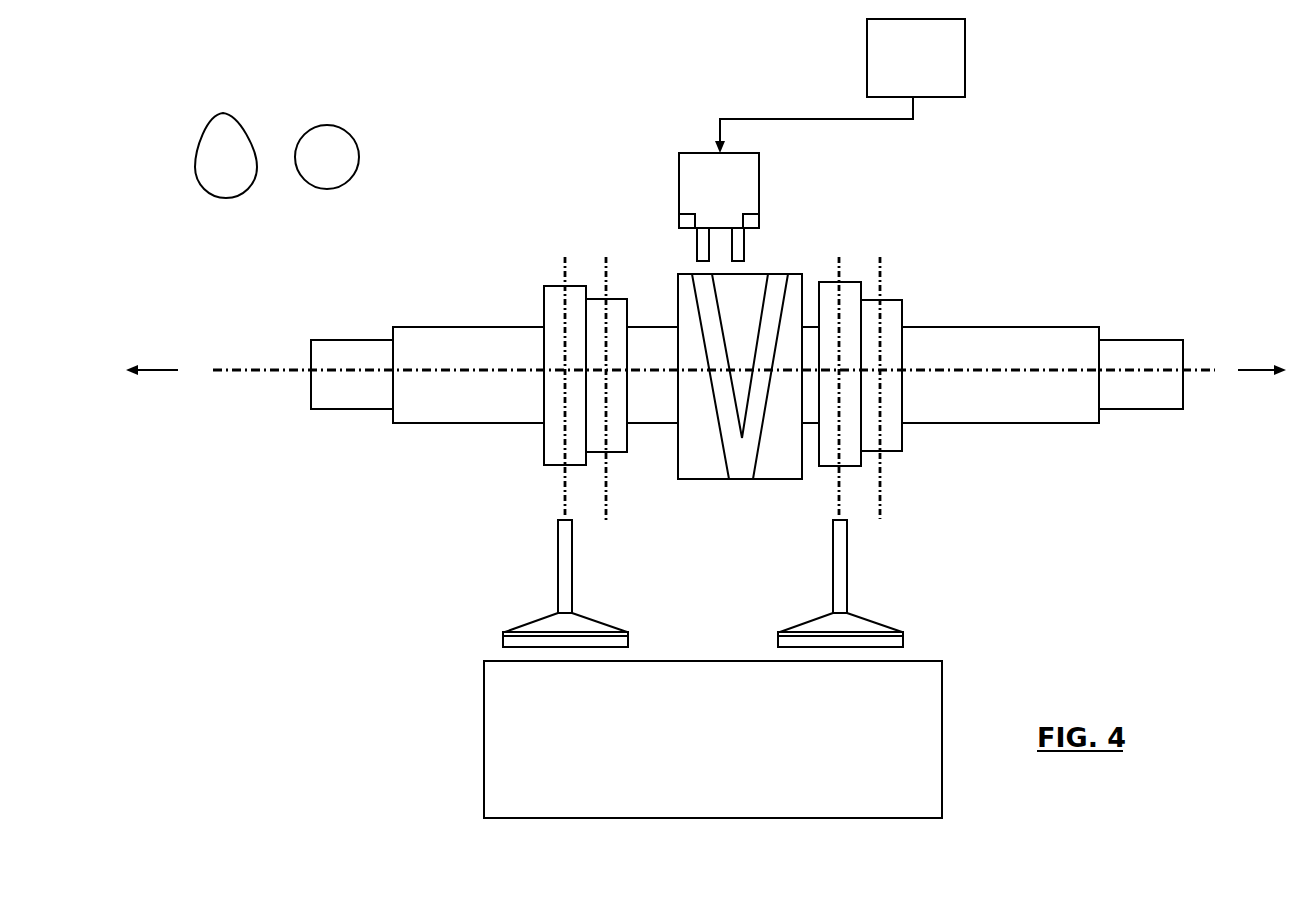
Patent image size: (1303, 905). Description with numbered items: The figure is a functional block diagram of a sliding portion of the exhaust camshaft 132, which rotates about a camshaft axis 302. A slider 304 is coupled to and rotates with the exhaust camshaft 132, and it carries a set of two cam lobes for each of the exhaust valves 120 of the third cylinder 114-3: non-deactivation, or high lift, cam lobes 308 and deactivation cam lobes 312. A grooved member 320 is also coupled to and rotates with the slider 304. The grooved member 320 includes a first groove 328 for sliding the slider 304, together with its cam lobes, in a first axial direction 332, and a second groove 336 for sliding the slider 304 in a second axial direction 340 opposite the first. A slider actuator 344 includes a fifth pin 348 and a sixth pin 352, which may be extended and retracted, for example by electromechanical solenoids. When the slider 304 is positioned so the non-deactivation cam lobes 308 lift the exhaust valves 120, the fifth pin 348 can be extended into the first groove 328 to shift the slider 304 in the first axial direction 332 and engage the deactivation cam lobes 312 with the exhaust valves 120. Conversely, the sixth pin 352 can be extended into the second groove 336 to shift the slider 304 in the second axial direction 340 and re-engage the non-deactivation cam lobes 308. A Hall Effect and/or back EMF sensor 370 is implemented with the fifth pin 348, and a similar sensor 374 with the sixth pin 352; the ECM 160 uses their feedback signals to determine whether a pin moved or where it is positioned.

The ECM 160 is at (965, 62).
The slider actuator 344 is at (702, 150).
The Hall Effect sensor and/or back EMF sensor 370 is at (680, 210).
The Hall Effect sensor and/or back EMF sensor 374 is at (752, 210).
The fifth pin 348 is at (697, 240).
The sixth pin 352 is at (745, 240).
The grooved member 320 is at (693, 479).
The first groove 328 is at (709, 387).
The second groove 336 is at (767, 410).
The slider 304 is at (468, 327).
The exhaust camshaft 132 is at (345, 340).
The non-deactivation cam lobes 308 is at (550, 286).
The deactivation cam lobes 312 is at (598, 298).
The camshaft axis 302 is at (1202, 368).
The first axial direction 332 is at (158, 370).
The second axial direction 340 is at (1265, 370).
The exhaust valves 120 is at (558, 567).
The third cylinder 114-3 is at (484, 743).